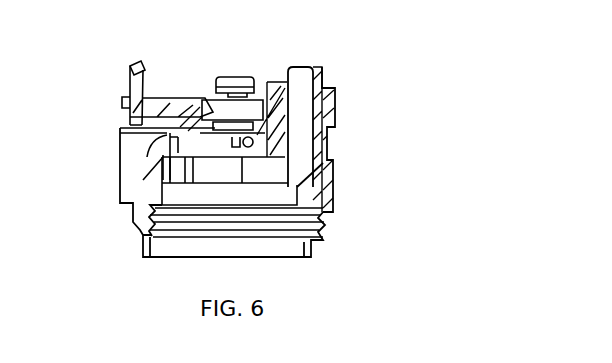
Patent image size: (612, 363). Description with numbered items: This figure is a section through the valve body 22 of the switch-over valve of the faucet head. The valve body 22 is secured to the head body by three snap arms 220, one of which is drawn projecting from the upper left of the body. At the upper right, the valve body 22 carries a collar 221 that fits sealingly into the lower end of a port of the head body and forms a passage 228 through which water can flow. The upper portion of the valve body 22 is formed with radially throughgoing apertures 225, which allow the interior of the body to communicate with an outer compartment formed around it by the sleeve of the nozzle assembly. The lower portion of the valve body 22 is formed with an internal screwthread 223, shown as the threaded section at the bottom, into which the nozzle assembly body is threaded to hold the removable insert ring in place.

The valve body 22 is at (452, 46).
The snap arms 220 is at (134, 70).
The collar 221 is at (325, 73).
The internal screwthread 223 is at (147, 224).
The apertures 225 is at (120, 134).
The passage 228 is at (305, 76).